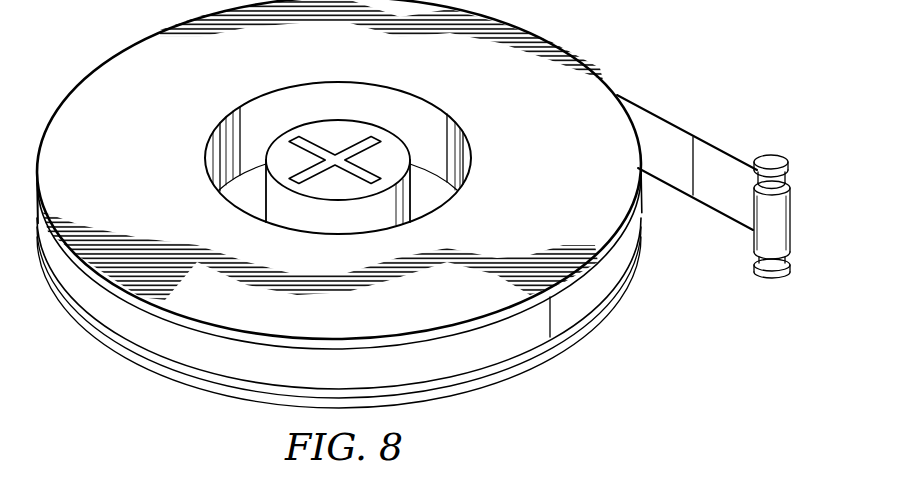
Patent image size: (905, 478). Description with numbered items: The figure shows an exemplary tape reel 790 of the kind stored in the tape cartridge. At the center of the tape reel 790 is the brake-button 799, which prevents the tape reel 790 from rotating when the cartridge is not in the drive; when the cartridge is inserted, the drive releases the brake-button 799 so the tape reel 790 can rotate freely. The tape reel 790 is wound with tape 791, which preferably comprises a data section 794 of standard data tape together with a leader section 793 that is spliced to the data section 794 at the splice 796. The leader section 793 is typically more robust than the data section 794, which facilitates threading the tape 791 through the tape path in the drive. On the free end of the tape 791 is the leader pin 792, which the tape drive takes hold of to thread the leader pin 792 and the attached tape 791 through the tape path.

The tape reel 790 is at (95, 83).
The tape 791 is at (668, 118).
The leader pin 792 is at (779, 150).
The leader section 793 is at (728, 207).
The data section 794 is at (607, 277).
The splice 796 is at (557, 323).
The brake-button 799 is at (327, 127).